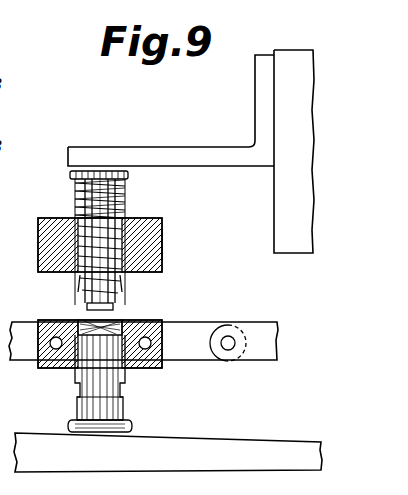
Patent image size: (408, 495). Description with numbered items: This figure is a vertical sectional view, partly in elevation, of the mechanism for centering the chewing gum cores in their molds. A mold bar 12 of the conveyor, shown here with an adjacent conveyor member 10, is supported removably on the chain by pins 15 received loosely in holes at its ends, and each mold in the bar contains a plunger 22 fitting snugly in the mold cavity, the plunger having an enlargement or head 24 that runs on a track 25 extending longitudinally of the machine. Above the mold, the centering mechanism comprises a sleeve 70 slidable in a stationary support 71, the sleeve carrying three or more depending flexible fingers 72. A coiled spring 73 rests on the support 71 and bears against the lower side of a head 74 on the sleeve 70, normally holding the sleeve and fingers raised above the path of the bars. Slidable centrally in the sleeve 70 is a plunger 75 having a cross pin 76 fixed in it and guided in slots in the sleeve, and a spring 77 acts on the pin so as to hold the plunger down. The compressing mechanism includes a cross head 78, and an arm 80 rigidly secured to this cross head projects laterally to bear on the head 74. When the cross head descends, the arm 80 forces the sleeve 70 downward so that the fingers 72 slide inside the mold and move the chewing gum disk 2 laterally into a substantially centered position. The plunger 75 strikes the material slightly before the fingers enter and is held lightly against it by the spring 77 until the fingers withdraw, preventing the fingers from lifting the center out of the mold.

The chewing gum disk 2 is at (86, 319).
The plate 10 is at (260, 333).
The mold bar 12 is at (160, 320).
The pin 15 is at (42, 362).
The plunger 22 is at (118, 386).
The head 24 is at (70, 426).
The track 25 is at (172, 462).
The sleeve 70 is at (125, 219).
The stationary support 71 is at (162, 241).
The depending fingers 72 is at (85, 289).
The coiled spring 73 is at (76, 196).
The head 74 is at (70, 173).
The plunger 75 is at (120, 294).
The cross pin 76 is at (121, 283).
The spring 77 is at (38, 236).
The cross head 78 is at (282, 81).
The arm 80 is at (142, 151).